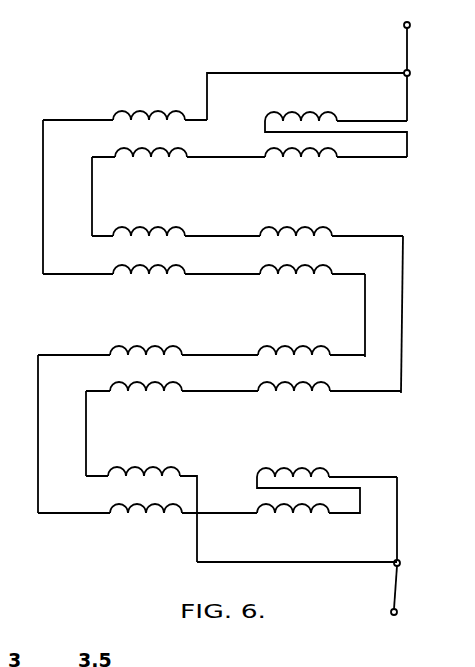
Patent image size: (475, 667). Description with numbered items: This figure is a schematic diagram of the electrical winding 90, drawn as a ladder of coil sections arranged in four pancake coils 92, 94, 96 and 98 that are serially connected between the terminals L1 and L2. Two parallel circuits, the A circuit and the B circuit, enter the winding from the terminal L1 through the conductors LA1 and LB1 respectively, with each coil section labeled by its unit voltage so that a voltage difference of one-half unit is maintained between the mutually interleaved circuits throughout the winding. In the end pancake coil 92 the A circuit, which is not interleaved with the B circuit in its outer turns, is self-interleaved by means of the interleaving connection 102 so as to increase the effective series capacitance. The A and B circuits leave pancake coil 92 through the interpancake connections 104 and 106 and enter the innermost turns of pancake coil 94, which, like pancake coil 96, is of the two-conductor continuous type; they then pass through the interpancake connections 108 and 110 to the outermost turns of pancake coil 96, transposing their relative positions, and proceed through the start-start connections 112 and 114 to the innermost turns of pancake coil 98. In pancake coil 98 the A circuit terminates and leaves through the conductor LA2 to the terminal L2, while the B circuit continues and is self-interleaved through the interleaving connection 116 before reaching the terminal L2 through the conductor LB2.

The electrical winding 90 is at (215, 50).
The pancake coil 92 is at (452, 135).
The pancake coil 94 is at (450, 262).
The pancake coil 96 is at (445, 386).
The pancake coil 98 is at (443, 508).
The interleaving connection 102 is at (262, 131).
The interpancake connection 104 is at (92, 178).
The interpancake connection 106 is at (43, 157).
The interpancake connection 108 is at (365, 314).
The interpancake connection 110 is at (402, 308).
The start-start connection 112 is at (86, 410).
The start-start connection 114 is at (40, 392).
The interleaving connection 116 is at (257, 490).
The terminal L1 is at (404, 25).
The terminal L2 is at (391, 611).
The conductor LA1 is at (409, 100).
The conductor LB1 is at (285, 73).
The conductor LA2 is at (261, 562).
The conductor LB2 is at (398, 535).